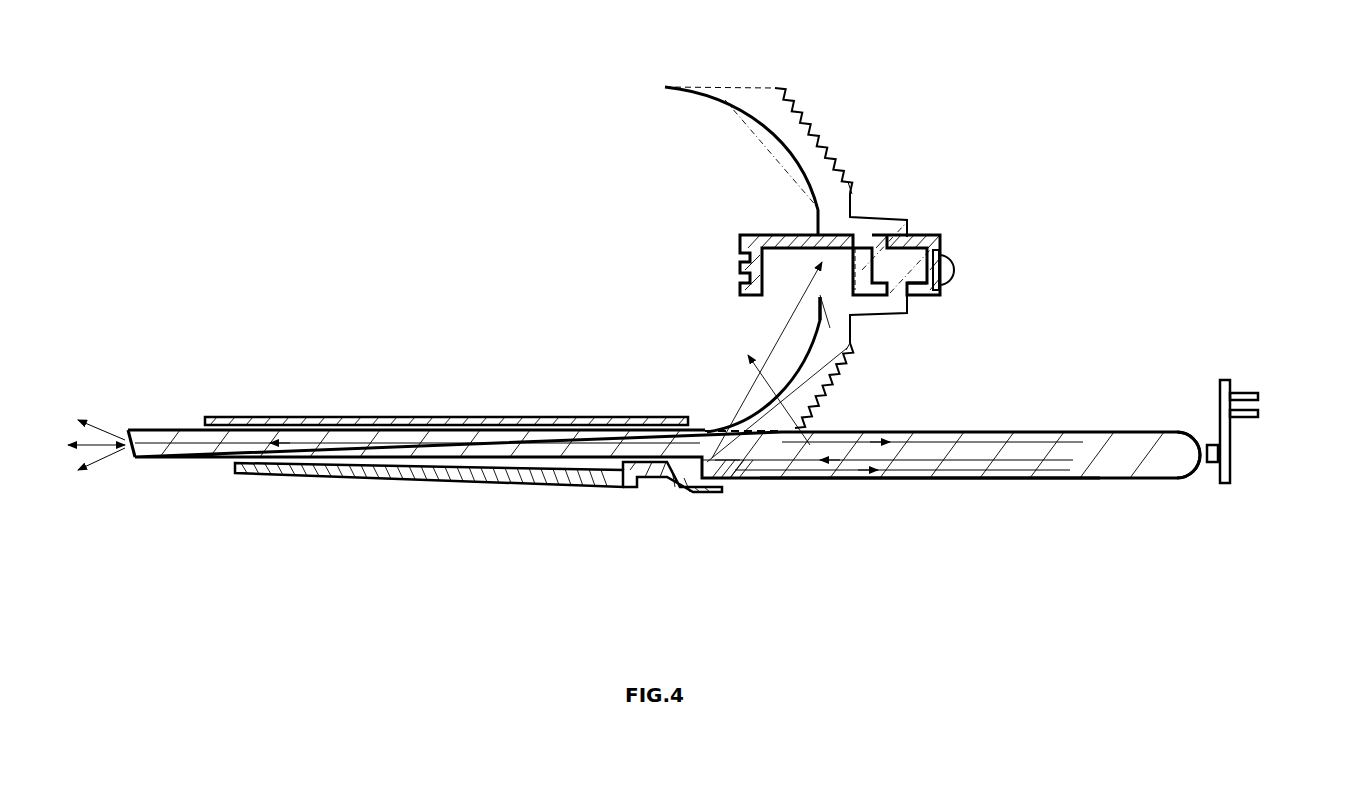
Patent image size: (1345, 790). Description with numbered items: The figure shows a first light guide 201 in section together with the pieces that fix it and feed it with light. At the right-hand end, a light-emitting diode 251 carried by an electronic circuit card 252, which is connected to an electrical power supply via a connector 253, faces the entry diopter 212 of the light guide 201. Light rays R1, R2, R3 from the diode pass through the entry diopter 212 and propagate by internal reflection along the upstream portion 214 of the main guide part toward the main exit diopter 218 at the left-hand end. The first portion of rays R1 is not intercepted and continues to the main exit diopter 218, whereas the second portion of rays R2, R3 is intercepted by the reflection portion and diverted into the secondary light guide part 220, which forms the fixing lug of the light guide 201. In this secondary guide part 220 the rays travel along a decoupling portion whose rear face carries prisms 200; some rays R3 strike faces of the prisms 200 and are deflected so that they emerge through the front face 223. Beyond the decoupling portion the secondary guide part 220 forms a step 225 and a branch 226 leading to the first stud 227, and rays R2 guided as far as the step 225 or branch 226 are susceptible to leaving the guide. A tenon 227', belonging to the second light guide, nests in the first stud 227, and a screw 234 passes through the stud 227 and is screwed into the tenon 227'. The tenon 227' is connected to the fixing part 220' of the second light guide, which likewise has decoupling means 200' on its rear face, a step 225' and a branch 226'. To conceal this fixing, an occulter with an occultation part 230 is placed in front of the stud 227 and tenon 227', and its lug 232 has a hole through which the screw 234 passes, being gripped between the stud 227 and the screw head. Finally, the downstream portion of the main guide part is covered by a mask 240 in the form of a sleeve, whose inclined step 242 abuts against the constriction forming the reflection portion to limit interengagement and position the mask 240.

The first light guide 201 is at (800, 500).
The entry diopter 212 is at (1196, 440).
The upstream portion 214 is at (913, 480).
The main exit diopter 218 is at (127, 430).
The secondary light guide part 220 is at (869, 385).
The fixing part 220' is at (846, 133).
The front face 223 is at (757, 403).
The step 225 is at (786, 312).
The step 225' is at (741, 161).
The branch 226 is at (894, 321).
The branch 226' is at (916, 211).
The first stud 227 is at (943, 307).
The tenon 227' is at (884, 230).
The occultation part 230 is at (742, 268).
The lug 232 is at (935, 240).
The screw 234 is at (953, 272).
The mask 240 is at (437, 415).
The step 242 is at (663, 485).
The light-emitting diode 251 is at (1208, 467).
The electronic circuit card 252 is at (1232, 448).
The connector 253 is at (1260, 402).
The prisms 200 is at (885, 365).
The decoupling means 200' is at (883, 159).
The light rays R1 is at (333, 441).
The light rays R2 is at (820, 295).
The light rays R3 is at (758, 368).